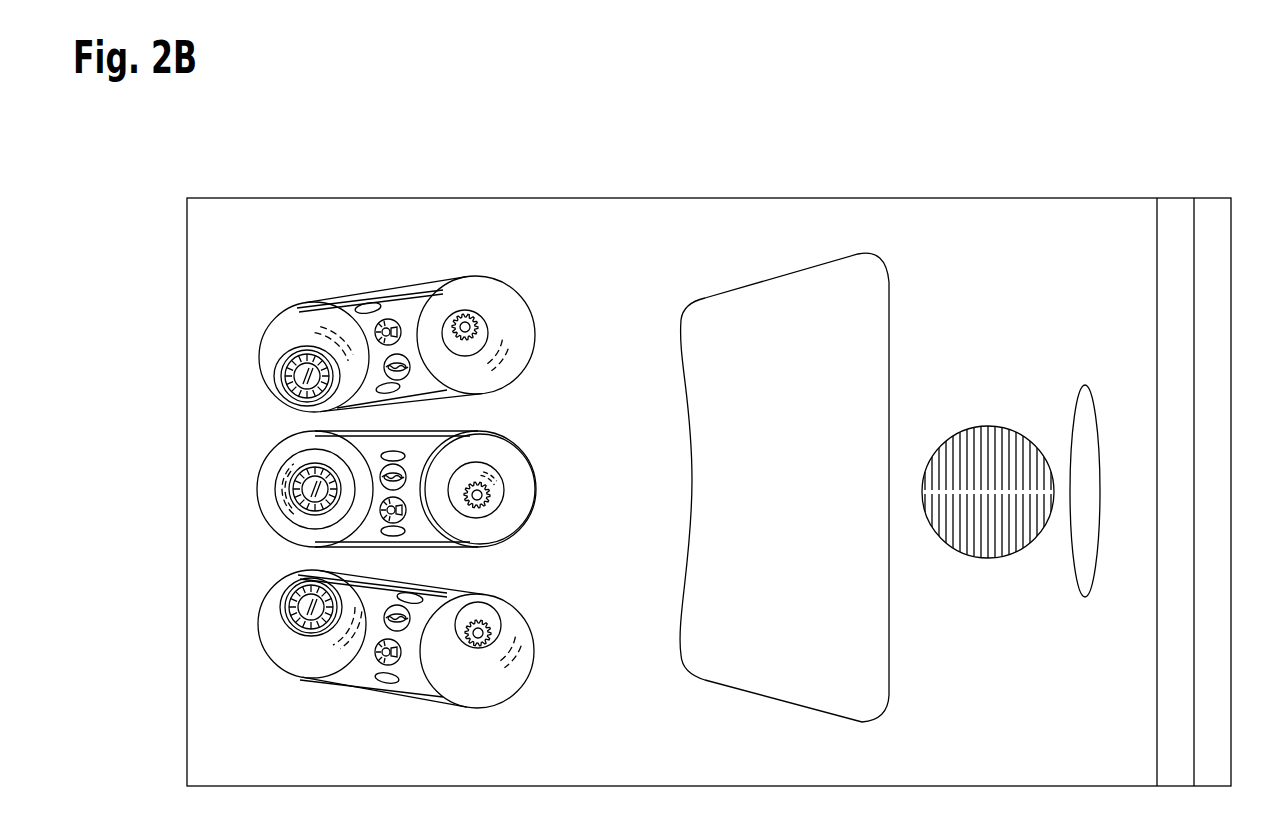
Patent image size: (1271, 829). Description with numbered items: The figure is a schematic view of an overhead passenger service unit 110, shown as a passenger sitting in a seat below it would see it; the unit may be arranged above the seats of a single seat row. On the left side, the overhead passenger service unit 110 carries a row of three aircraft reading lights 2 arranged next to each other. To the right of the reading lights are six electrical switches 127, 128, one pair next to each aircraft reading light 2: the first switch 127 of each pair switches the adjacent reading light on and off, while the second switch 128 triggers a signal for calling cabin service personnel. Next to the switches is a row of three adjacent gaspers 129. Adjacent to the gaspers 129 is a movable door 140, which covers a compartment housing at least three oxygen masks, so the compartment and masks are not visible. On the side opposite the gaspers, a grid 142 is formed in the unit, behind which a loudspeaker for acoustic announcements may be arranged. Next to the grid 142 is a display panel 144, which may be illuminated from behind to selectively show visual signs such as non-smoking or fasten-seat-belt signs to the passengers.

The overhead passenger service unit 110 is at (1089, 175).
The aircraft reading light 2 is at (299, 340).
The first switch 127 is at (384, 319).
The second switch 128 is at (398, 352).
The gasper 129 is at (477, 319).
The movable door 140 is at (770, 672).
The grid 142 is at (988, 424).
The display panel 144 is at (1099, 425).